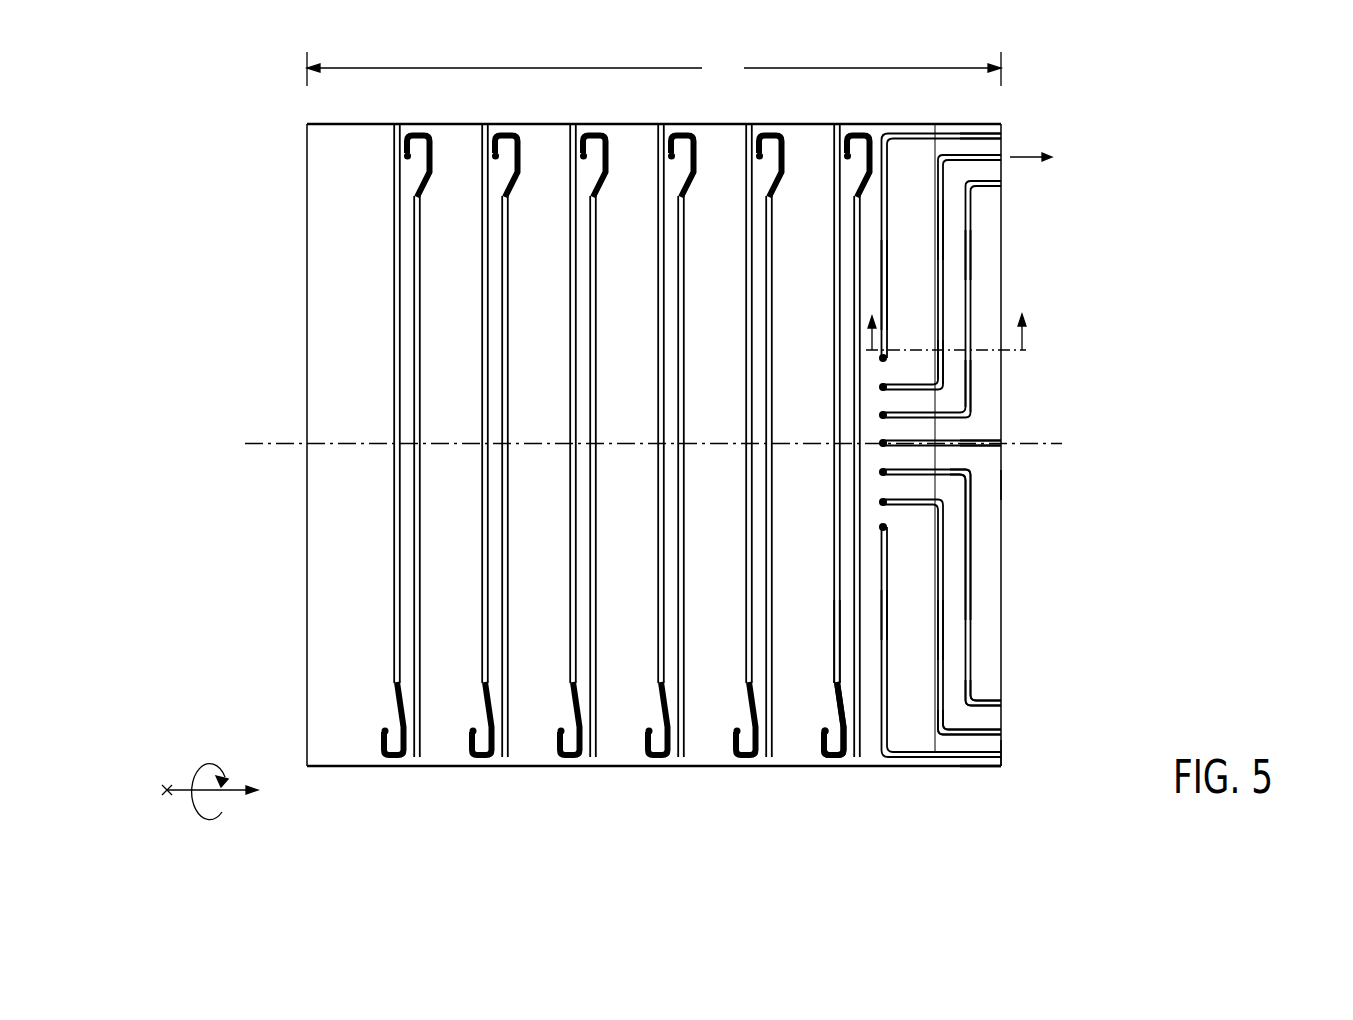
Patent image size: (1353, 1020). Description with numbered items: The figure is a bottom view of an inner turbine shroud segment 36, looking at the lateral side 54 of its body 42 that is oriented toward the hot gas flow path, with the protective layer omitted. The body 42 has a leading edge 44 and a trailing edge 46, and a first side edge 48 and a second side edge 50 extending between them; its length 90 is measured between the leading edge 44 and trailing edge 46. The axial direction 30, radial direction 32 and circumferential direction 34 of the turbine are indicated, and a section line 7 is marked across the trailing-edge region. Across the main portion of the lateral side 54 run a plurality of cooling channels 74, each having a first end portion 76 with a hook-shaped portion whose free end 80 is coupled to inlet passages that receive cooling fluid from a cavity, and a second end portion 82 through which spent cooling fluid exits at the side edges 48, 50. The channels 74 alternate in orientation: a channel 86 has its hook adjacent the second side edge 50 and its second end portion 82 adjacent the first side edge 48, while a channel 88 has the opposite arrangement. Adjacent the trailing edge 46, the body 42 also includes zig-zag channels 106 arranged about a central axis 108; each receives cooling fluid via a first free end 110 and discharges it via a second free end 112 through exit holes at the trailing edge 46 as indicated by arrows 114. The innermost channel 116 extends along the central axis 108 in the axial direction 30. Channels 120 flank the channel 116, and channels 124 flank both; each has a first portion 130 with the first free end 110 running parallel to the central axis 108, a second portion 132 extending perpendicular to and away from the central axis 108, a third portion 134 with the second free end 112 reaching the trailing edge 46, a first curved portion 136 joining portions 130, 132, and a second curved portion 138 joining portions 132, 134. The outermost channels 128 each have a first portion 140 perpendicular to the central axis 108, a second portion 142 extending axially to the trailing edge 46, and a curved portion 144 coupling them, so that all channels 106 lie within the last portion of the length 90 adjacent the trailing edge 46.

The section line 7 is at (946, 319).
The axial direction 30 is at (231, 798).
The radial direction 32 is at (168, 787).
The circumferential direction 34 is at (196, 764).
The inner turbine shroud segment 36 is at (963, 767).
The body 42 is at (997, 767).
The leading edge 44 is at (307, 620).
The trailing edge 46 is at (1003, 488).
The first side edge 48 is at (620, 767).
The second side edge 50 is at (586, 124).
The lateral side 54 is at (903, 160).
The channels 74 is at (862, 124).
The first end portion 76 is at (820, 740).
The free end 80 is at (826, 730).
The second end portion 82 is at (837, 124).
The channel 86 is at (415, 126).
The channel 88 is at (396, 124).
The length 90 is at (654, 69).
The channels 106 is at (975, 372).
The central axis 108 is at (1030, 440).
The first free end 110 is at (885, 357).
The second free end 112 is at (1001, 135).
The arrows 114 is at (1033, 157).
The innermost channel 116 is at (995, 440).
The channels 120 is at (968, 253).
The channels 124 is at (943, 208).
The channels 128 is at (892, 240).
The first portion 130 is at (967, 480).
The second portion 132 is at (970, 540).
The third portion 134 is at (973, 740).
The first curved portion 136 is at (940, 347).
The second curved portion 138 is at (940, 158).
The first portion 140 is at (892, 593).
The second portion 142 is at (915, 742).
The curved portion 144 is at (882, 755).